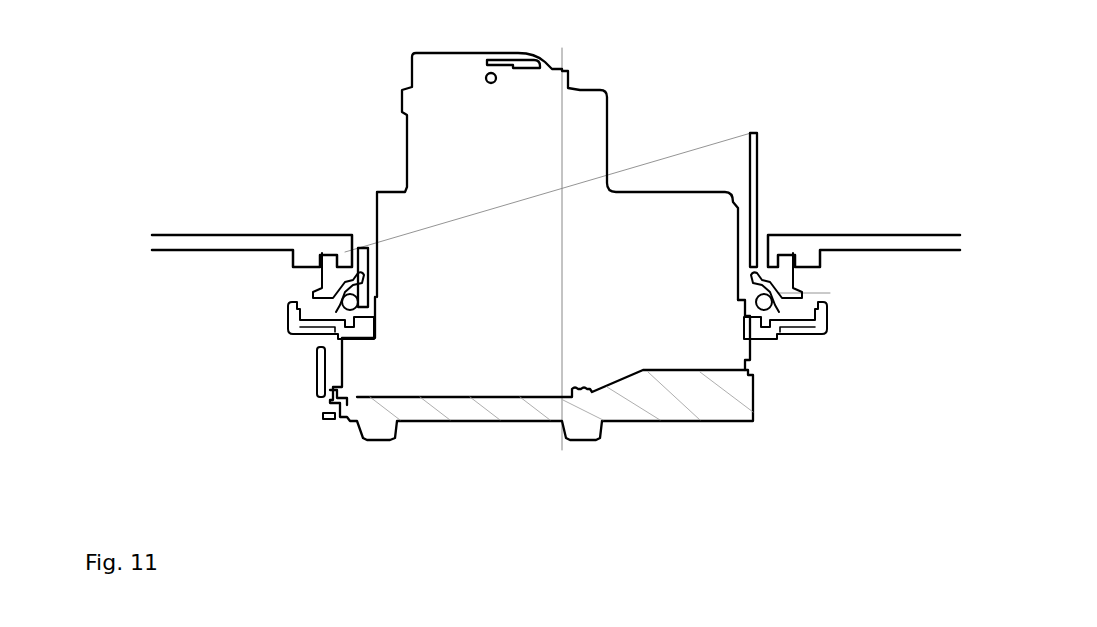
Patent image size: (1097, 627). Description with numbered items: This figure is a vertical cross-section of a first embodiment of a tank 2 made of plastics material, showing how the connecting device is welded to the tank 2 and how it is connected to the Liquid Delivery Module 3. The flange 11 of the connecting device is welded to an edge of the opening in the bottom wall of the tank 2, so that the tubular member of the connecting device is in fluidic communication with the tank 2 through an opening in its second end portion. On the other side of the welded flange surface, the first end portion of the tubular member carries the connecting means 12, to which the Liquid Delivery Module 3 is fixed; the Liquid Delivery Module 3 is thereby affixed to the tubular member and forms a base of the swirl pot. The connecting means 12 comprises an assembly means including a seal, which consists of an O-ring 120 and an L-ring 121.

The tank 2 is at (141, 254).
The flange 11 is at (301, 295).
The connecting means 12 is at (435, 382).
The O-ring 120 is at (293, 334).
The L-ring 121 is at (293, 347).
The Liquid Delivery Module 3 is at (313, 415).